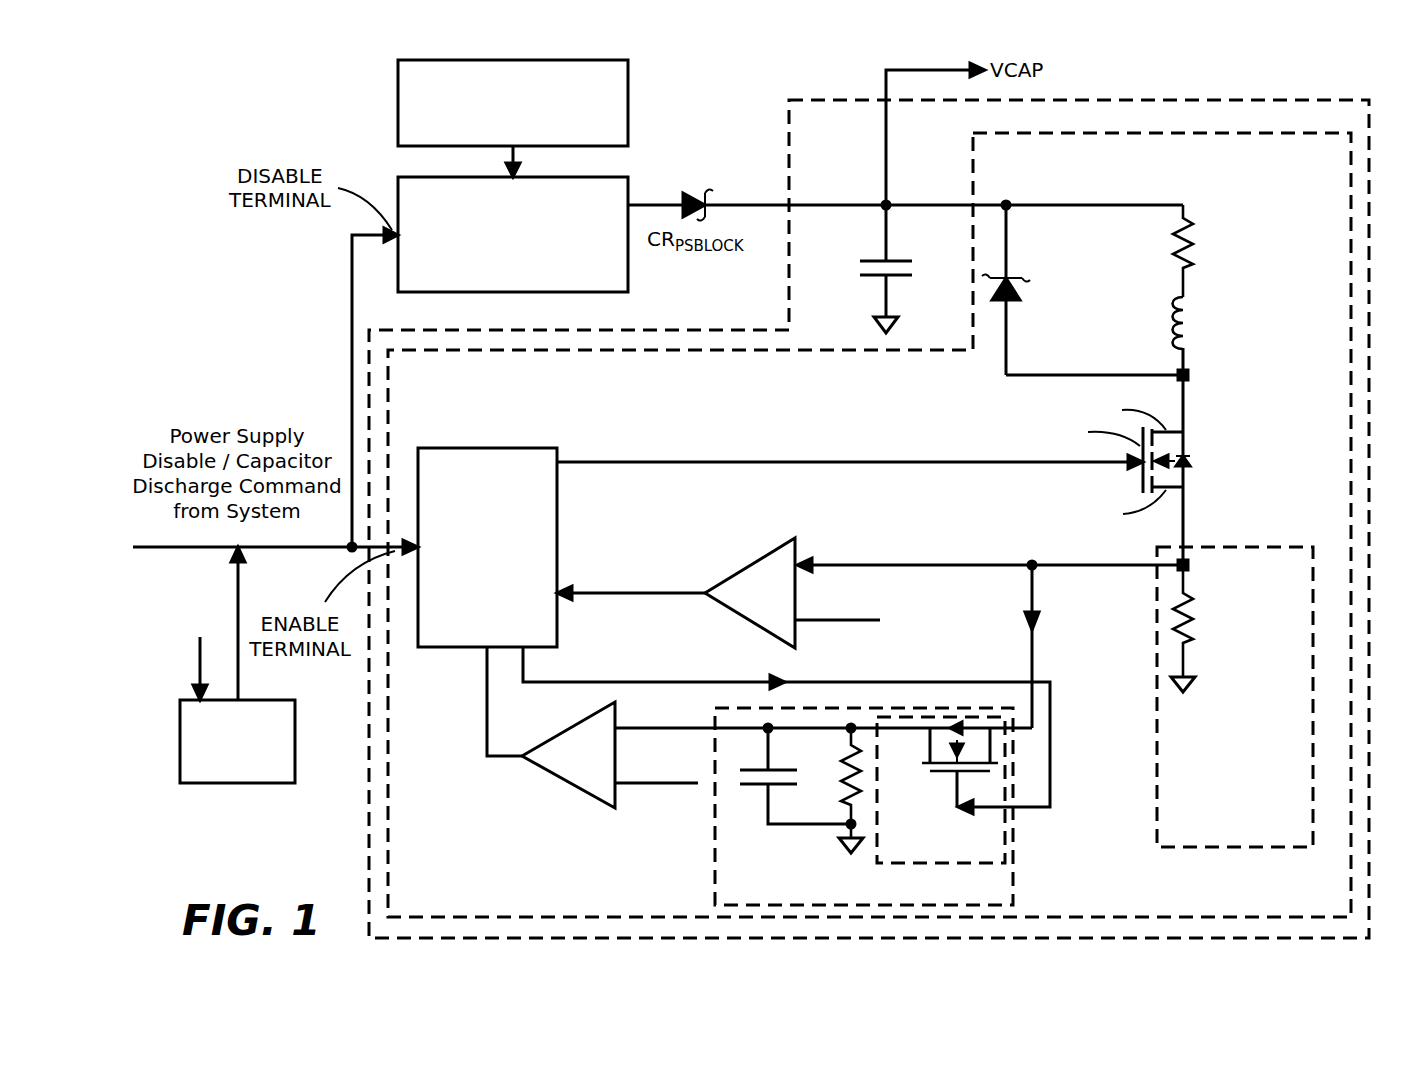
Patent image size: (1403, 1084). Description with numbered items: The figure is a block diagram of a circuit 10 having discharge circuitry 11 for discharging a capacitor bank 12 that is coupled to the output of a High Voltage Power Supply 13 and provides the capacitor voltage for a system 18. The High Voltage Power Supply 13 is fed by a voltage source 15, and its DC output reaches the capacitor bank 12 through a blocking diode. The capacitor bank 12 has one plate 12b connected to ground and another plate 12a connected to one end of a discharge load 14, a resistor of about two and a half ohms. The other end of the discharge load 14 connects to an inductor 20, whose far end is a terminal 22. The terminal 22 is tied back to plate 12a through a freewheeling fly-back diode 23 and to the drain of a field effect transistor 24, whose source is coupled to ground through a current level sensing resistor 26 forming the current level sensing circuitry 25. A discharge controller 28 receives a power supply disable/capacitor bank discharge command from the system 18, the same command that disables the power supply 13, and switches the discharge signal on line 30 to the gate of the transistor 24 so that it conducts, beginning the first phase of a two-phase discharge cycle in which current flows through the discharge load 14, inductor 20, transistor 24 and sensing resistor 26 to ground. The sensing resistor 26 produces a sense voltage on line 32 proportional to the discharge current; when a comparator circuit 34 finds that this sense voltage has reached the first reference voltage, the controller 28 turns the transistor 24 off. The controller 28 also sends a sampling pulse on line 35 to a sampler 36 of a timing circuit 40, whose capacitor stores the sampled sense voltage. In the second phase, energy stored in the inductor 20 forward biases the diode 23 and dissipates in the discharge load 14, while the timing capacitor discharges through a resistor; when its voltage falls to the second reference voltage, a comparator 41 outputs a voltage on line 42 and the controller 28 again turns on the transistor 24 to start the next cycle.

The circuit 10 is at (869, 519).
The discharge circuitry 11 is at (869, 525).
The capacitor bank 12 is at (882, 233).
The plate 12a is at (864, 258).
The plate 12b is at (898, 277).
The High Voltage Power Supply 13 is at (513, 234).
The discharge load 14 is at (1196, 247).
The voltage source 15 is at (513, 103).
The system 18 is at (236, 665).
The inductor 20 is at (1190, 318).
The terminal 22 is at (1190, 375).
The fly-back diode 23 is at (1018, 284).
The Field Effect Transistor 24 is at (1190, 478).
The current level sensing circuitry 25 is at (1235, 697).
The current level sensing resistor 26 is at (1176, 637).
The discharge controller 28 is at (487, 547).
The line 30 is at (852, 460).
The line 32 is at (902, 562).
The comparator circuit 34 is at (718, 596).
The line 35 is at (912, 680).
The sampler 36 is at (1005, 835).
The timing circuit 40 is at (1013, 890).
The comparator 41 is at (766, 782).
The line 42 is at (485, 706).